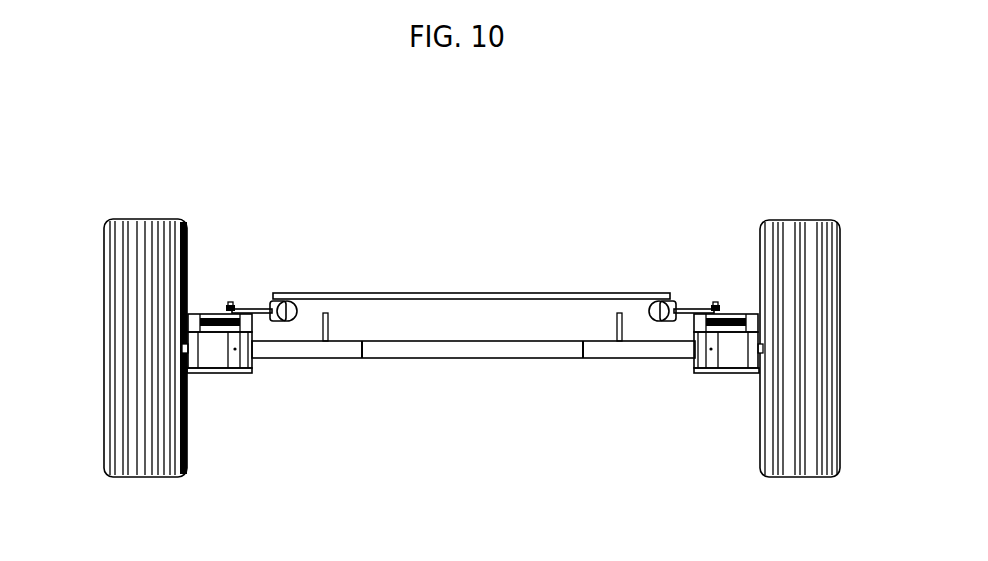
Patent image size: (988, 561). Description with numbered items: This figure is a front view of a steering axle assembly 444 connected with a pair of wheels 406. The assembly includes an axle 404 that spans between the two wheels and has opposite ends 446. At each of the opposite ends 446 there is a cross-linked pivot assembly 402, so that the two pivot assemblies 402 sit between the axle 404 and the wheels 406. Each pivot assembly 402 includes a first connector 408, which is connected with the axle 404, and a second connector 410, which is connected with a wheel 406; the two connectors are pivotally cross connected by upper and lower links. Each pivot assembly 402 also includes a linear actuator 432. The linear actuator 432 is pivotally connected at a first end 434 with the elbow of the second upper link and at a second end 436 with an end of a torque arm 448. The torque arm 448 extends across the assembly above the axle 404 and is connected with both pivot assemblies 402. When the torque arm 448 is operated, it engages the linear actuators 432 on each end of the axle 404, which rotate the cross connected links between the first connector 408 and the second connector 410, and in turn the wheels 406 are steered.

The pivot assembly 402 is at (198, 403).
The axle 404 is at (473, 350).
The wheel 406 is at (107, 370).
The first connector 408 is at (242, 372).
The second connector 410 is at (198, 372).
The linear actuator 432 is at (258, 313).
The first end 434 is at (232, 305).
The second end 436 is at (292, 300).
The steering axle assembly 444 is at (167, 148).
The opposite end 446 is at (345, 350).
The torque arm 448 is at (480, 293).